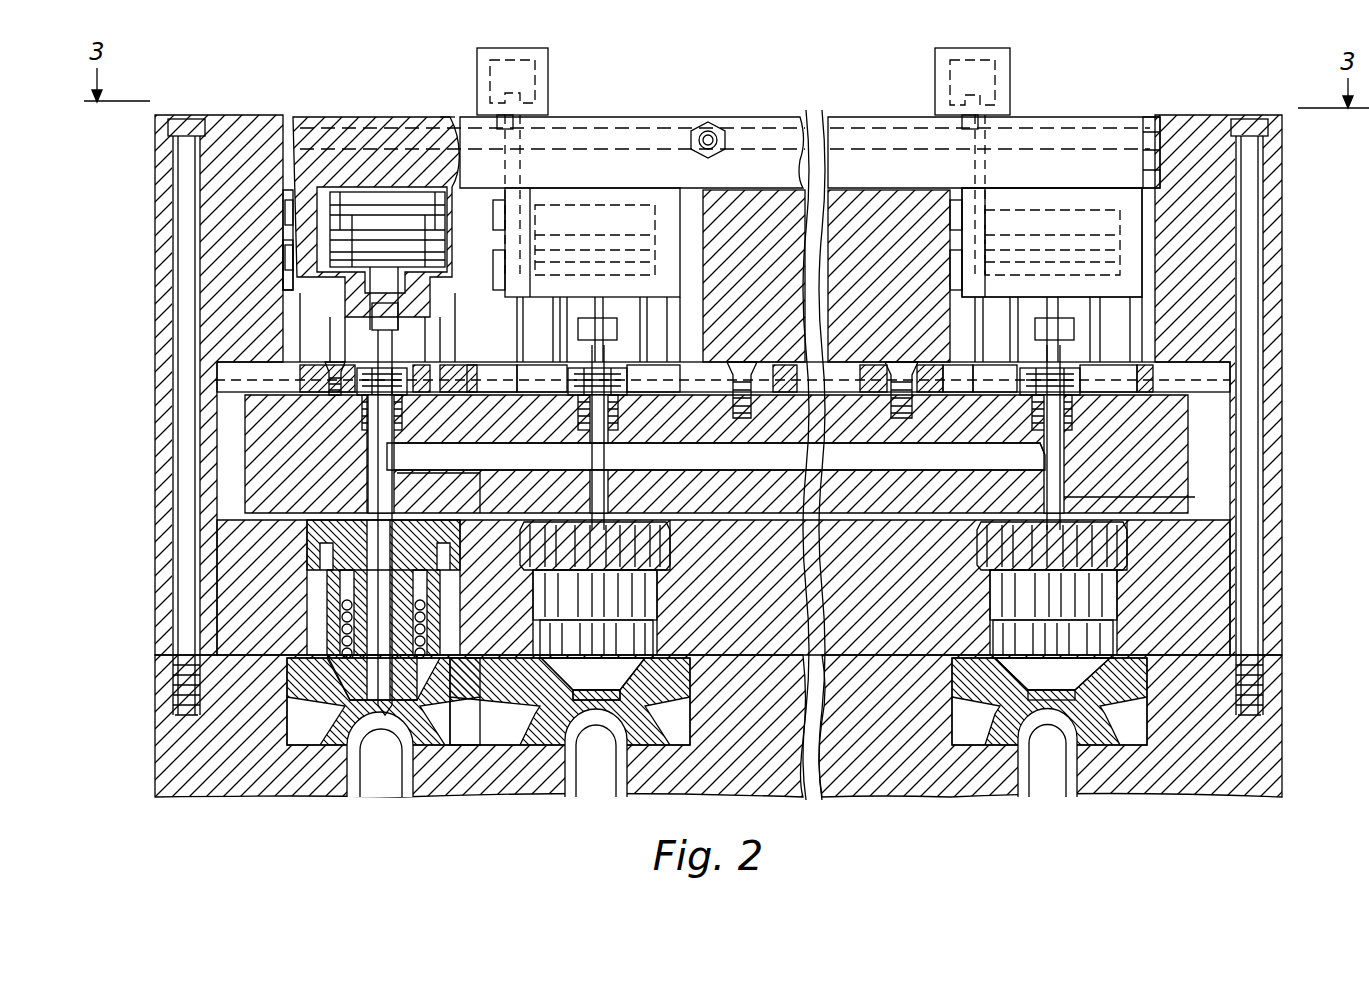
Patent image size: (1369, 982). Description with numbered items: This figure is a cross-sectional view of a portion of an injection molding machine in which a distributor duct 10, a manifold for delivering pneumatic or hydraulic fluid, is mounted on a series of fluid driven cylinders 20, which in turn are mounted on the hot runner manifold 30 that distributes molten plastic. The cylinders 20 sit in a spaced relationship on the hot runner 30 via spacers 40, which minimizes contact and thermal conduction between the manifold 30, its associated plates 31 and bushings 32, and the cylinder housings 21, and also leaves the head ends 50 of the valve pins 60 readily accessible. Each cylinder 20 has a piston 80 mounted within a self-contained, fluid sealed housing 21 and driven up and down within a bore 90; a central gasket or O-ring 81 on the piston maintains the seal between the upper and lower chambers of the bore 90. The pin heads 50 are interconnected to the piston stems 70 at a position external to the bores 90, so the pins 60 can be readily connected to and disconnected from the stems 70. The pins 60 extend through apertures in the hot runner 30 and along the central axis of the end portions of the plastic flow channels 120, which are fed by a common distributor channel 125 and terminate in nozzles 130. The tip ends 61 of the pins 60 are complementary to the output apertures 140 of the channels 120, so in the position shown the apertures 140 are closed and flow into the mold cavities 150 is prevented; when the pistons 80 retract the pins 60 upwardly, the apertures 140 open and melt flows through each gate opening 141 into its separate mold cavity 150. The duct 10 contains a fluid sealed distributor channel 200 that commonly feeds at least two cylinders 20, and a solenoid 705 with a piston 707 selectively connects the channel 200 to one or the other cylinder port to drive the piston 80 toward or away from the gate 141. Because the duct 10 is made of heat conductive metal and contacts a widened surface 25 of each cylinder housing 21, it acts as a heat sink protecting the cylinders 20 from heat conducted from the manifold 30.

The distributor duct 10 is at (621, 114).
The fluid driven cylinders 20 is at (1150, 232).
The cylinder housing 21 is at (665, 200).
The surface of the cylinder housing 25 is at (462, 180).
The hot runner manifold 30 is at (1200, 435).
The plates 31 is at (370, 380).
The bushings 32 is at (360, 460).
The spacers 40 is at (315, 342).
The head ends of valve pins 50 is at (290, 380).
The valve pins 60 is at (340, 545).
The tip ends of pins 61 is at (395, 758).
The piston stems 70 is at (355, 308).
The pistons 80 is at (415, 230).
The central gasket or O-ring 81 is at (290, 250).
The cylinder bores 90 is at (382, 220).
The plastic flow channels 120 is at (360, 482).
The common distributor channel 125 is at (748, 470).
The nozzles 130 is at (330, 590).
The output apertures 140 is at (380, 712).
The gate opening 141 is at (595, 702).
The mold cavities 150 is at (550, 742).
The fluid sealed distributor channel 200 is at (860, 135).
The solenoid 705 is at (548, 78).
The solenoid piston 707 is at (490, 80).